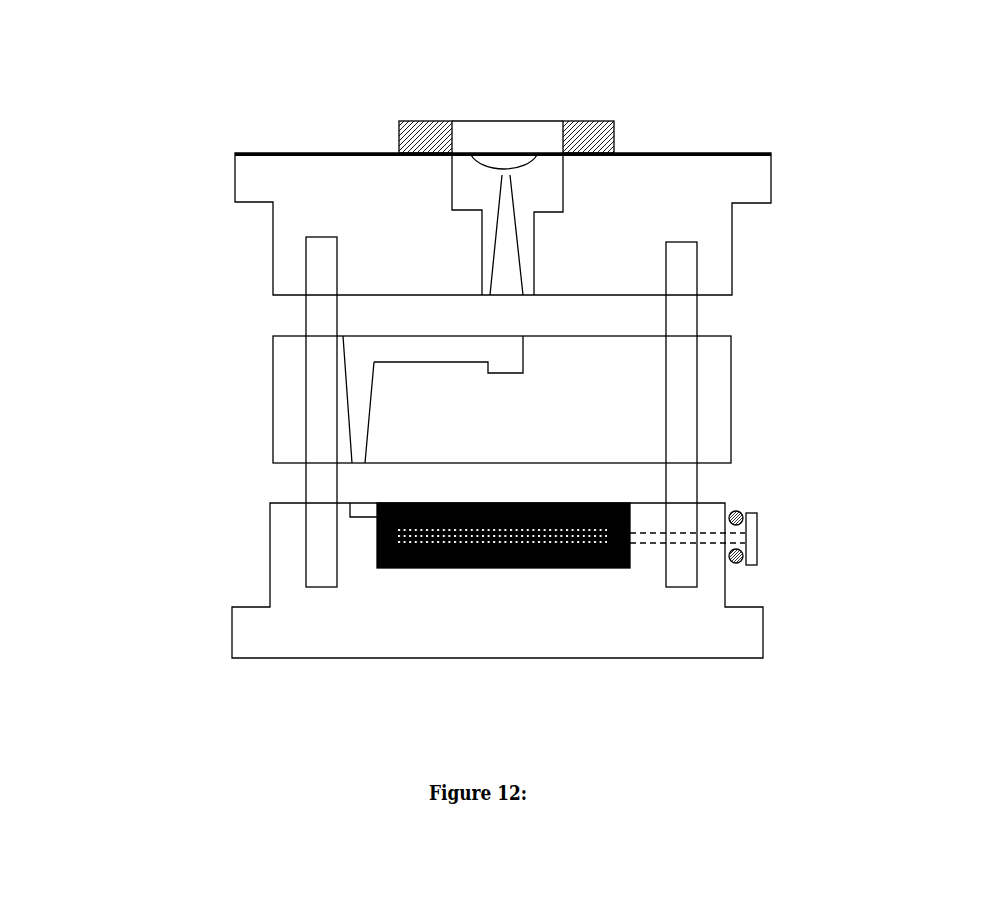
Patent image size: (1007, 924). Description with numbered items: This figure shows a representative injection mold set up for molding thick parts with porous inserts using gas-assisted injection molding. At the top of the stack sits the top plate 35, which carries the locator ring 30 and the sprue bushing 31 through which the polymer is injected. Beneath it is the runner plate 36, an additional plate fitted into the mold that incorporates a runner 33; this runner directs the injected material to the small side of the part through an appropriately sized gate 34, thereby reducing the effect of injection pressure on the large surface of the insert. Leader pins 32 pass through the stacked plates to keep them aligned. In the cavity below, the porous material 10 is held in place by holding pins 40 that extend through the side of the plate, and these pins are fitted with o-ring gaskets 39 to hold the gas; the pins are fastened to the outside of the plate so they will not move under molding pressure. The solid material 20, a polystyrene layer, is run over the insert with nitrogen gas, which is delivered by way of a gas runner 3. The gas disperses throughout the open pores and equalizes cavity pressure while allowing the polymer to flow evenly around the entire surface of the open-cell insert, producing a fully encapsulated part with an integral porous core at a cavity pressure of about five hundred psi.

The gas runner 3 is at (770, 628).
The porous material 10 is at (498, 568).
The solid material 20 is at (367, 552).
The locator ring 30 is at (598, 118).
The sprue bushing 31 is at (525, 165).
The leader pin 32 is at (303, 237).
The runner 33 is at (410, 333).
The gate 34 is at (365, 497).
The top plate 35 is at (776, 165).
The runner plate 36 is at (737, 400).
The o-ring gasket 39 is at (738, 507).
The holding pin 40 is at (762, 530).